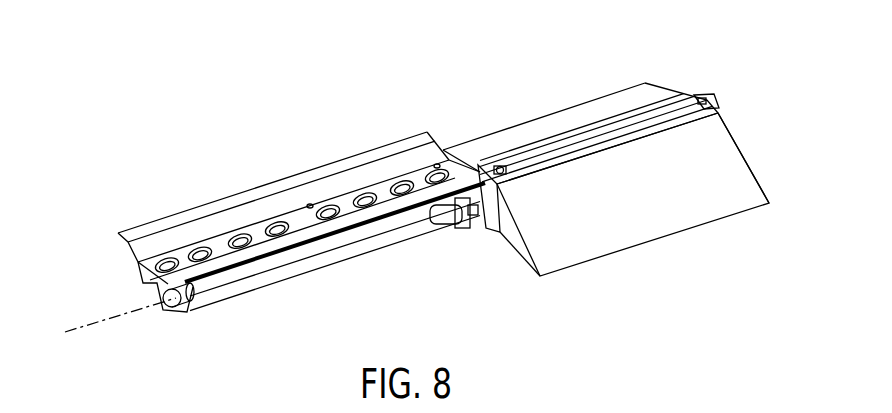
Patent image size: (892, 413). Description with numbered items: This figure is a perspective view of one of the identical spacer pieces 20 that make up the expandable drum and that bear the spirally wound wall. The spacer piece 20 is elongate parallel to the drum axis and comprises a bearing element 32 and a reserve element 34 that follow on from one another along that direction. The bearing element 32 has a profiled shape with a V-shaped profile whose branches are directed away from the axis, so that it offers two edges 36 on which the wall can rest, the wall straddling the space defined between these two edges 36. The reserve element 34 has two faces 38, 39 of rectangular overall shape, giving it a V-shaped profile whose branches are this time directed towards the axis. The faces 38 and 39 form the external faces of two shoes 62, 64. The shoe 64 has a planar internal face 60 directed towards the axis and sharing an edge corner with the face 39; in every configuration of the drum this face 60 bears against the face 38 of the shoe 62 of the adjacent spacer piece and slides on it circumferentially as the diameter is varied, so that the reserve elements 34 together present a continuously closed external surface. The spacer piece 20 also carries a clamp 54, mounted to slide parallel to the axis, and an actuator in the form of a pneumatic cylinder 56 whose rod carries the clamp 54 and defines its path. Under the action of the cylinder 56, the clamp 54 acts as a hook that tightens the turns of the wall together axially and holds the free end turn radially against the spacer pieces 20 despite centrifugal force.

The spacer piece 20 is at (670, 61).
The bearing element 32 is at (375, 150).
The reserve element 34 is at (614, 100).
The edges 36 is at (255, 190).
The face 38 is at (551, 126).
The face 39 is at (674, 229).
The clamp 54 is at (500, 167).
The pneumatic cylinder 56 is at (290, 272).
The planar internal face 60 is at (509, 248).
The shoe 62 is at (697, 88).
The shoe 64 is at (755, 153).